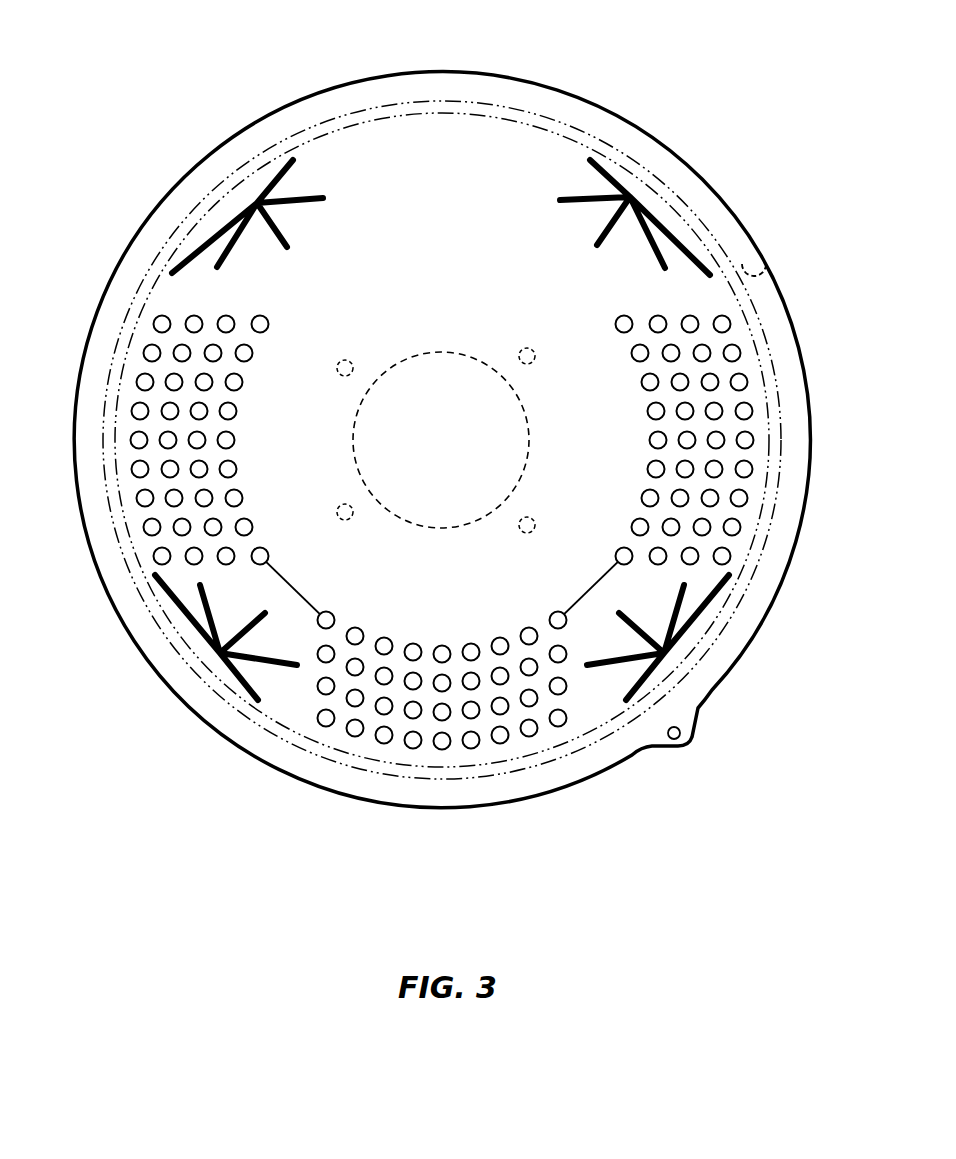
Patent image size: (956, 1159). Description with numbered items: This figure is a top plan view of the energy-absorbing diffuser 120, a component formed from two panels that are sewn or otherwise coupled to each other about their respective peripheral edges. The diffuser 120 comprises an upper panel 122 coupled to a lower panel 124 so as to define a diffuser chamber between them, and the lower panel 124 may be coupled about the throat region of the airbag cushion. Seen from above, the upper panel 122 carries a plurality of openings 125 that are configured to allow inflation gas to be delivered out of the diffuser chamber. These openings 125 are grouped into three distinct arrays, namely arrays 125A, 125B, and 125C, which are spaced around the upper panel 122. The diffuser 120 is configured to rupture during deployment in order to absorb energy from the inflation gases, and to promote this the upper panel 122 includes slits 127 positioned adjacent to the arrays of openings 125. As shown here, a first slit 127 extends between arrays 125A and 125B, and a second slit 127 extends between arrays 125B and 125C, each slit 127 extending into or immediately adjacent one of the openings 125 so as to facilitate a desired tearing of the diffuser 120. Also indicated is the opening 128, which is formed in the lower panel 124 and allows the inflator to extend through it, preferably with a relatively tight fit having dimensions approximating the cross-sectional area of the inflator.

The diffuser 120 is at (688, 105).
The upper panel 122 is at (707, 204).
The lower panel 124 is at (767, 263).
The openings 125 is at (146, 533).
The first array of openings 125A is at (762, 399).
The second array of openings 125B is at (492, 760).
The third array of openings 125C is at (118, 418).
The slits 127 is at (290, 592).
The opening 128 is at (464, 352).